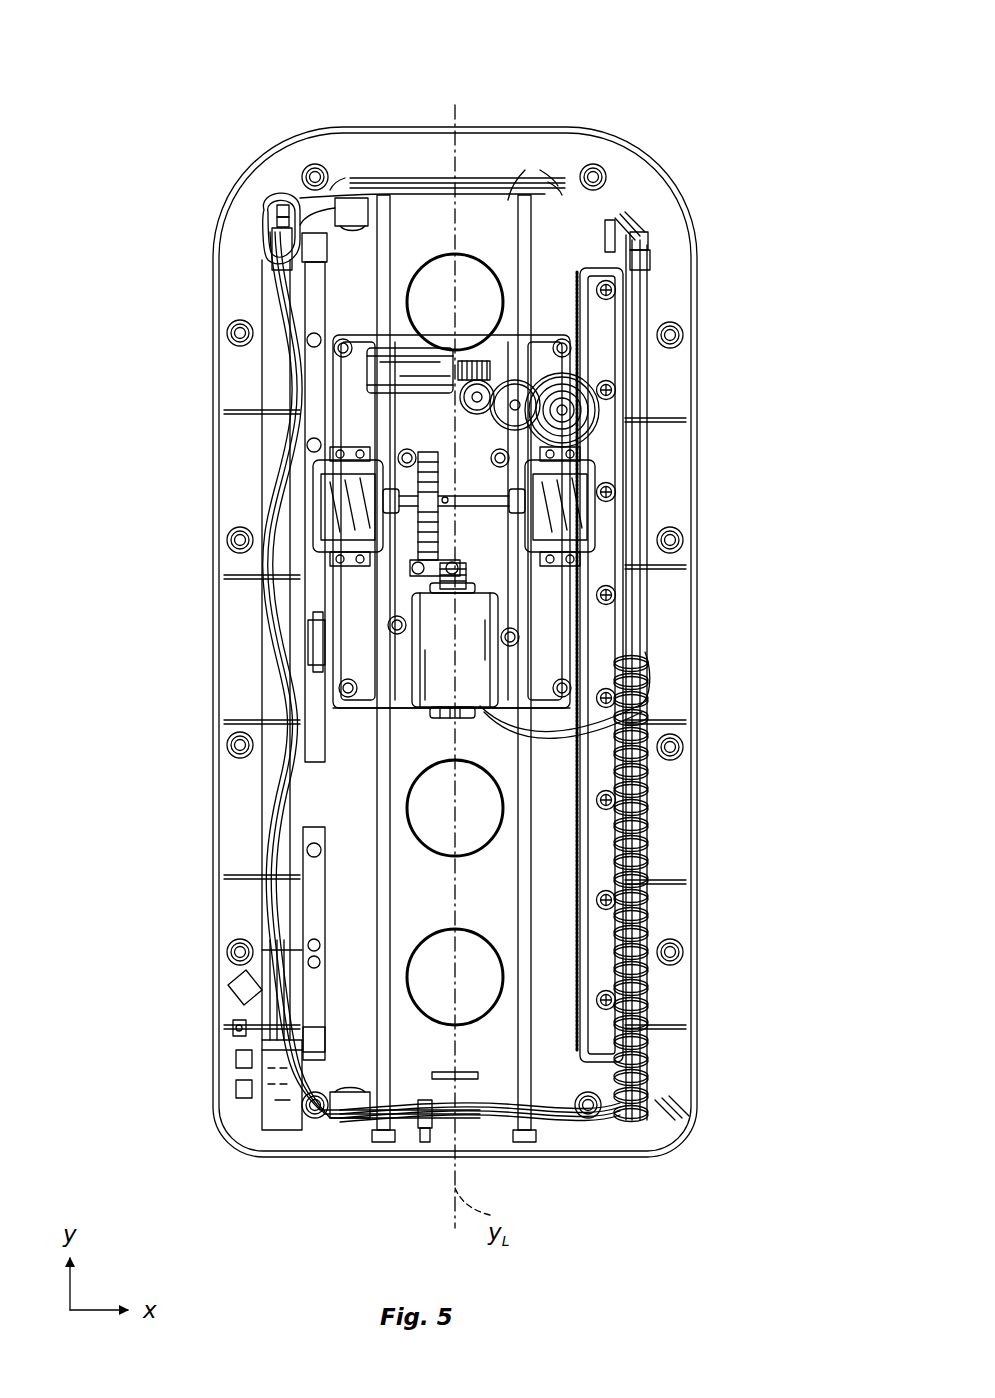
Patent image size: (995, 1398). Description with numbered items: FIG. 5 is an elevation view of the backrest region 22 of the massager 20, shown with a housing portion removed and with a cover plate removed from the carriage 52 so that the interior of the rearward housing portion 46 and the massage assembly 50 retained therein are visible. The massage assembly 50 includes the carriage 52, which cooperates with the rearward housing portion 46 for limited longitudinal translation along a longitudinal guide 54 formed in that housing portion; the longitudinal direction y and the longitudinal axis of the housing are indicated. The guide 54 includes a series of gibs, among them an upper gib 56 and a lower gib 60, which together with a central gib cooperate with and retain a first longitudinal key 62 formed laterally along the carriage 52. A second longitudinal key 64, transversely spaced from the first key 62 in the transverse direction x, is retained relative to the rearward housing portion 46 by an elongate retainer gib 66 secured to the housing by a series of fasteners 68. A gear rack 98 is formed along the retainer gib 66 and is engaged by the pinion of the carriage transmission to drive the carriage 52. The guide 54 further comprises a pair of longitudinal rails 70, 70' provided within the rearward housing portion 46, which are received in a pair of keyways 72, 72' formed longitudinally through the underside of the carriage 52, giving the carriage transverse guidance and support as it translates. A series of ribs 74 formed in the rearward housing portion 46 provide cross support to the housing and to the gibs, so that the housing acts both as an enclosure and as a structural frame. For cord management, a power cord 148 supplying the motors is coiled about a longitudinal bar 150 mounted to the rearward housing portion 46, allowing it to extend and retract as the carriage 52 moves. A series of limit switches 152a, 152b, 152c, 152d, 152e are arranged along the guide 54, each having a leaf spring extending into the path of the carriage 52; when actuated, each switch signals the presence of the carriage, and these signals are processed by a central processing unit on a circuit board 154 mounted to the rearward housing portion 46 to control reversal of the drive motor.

The grill assembly 20 is at (608, 45).
The backrest region 22 is at (635, 85).
The rearward housing portion 46 is at (700, 283).
The massage assembly 50 is at (308, 443).
The carriage 52 is at (318, 387).
The longitudinal guide 54 is at (300, 965).
The upper gib 56 is at (306, 340).
The lower gib 60 is at (305, 925).
The first longitudinal key 62 is at (318, 640).
The second longitudinal key 64 is at (578, 366).
The elongate retainer gib 66 is at (608, 628).
The fasteners 68 is at (612, 598).
The longitudinal rail 70 is at (407, 609).
The longitudinal rail 70' is at (555, 609).
The keyway 72 is at (240, 751).
The keyway 72' is at (651, 871).
The ribs 74 is at (655, 884).
The gear rack 98 is at (588, 836).
The power cord 148 is at (622, 782).
The longitudinal bar 150 is at (660, 418).
The limit switch 152a is at (350, 197).
The limit switch 152b is at (275, 205).
The limit switch 152c is at (312, 660).
The limit switch 152d is at (318, 1043).
The limit switch 152e is at (355, 1118).
The circuit board 154 is at (270, 1122).